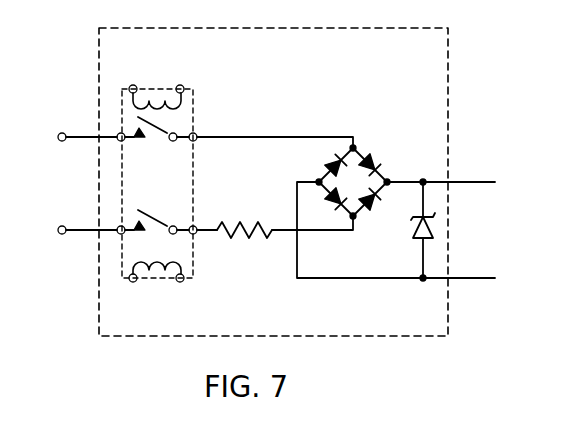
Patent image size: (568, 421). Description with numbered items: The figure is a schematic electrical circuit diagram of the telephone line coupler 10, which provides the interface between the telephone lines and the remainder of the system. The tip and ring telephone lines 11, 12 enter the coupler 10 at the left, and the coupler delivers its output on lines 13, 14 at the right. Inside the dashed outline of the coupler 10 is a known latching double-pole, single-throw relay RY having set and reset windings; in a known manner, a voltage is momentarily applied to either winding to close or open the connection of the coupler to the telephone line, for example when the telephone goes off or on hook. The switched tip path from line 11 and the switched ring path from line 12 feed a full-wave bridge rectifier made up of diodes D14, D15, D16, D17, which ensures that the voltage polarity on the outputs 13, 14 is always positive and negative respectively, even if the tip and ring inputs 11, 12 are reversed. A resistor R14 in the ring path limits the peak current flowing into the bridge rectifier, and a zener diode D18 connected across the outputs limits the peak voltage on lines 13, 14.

The telephone line coupler 10 is at (98, 274).
The telephone line (tip input) 11 is at (68, 131).
The telephone line (ring input) 12 is at (70, 225).
The output line 13 is at (478, 182).
The output line 14 is at (478, 278).
The latching double-pole, single-throw relay RY is at (193, 184).
The resistor R14 is at (248, 241).
The diode D14 is at (329, 169).
The diode D15 is at (329, 200).
The diode D16 is at (393, 166).
The diode D17 is at (393, 203).
The zener diode D18 is at (406, 241).